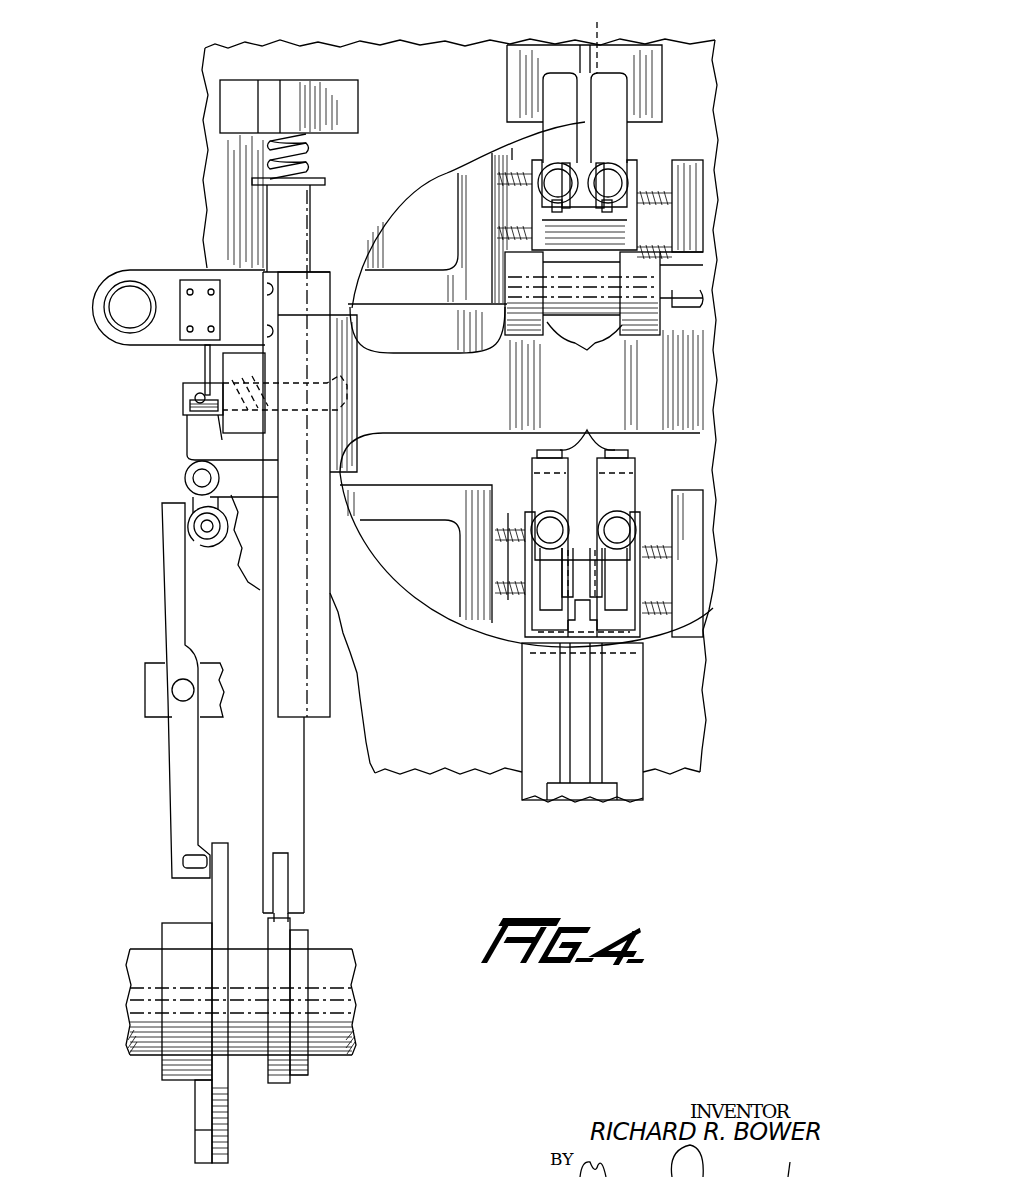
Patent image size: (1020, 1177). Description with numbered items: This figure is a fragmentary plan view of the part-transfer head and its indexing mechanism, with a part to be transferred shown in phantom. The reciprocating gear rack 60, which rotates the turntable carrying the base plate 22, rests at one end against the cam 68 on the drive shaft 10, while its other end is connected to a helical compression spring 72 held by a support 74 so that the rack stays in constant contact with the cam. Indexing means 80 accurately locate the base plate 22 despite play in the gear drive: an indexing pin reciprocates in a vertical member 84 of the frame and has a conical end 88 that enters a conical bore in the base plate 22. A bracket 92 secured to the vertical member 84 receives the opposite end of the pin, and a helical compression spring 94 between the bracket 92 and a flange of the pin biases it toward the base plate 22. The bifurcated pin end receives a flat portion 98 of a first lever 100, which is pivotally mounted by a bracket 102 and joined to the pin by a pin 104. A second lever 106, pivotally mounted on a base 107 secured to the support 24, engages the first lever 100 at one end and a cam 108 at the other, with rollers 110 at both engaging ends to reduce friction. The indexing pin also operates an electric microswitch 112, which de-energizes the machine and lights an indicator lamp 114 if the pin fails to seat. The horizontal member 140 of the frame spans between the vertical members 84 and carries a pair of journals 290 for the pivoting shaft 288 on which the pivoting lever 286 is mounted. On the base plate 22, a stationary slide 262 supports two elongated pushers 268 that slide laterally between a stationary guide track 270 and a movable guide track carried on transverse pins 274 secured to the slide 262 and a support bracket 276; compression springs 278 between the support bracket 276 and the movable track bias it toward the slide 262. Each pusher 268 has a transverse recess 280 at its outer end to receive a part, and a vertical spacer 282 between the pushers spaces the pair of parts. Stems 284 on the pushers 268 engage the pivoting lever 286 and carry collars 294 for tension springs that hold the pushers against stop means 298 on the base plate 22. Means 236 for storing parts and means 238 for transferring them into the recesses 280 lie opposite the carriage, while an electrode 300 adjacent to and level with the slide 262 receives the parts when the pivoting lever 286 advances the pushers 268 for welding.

The shaft 10 is at (138, 956).
The base plate 22 is at (421, 598).
The support 24 is at (414, 843).
The reciprocating gear rack 60 is at (305, 812).
The cam 68 is at (283, 1085).
The helical compression spring 72 is at (310, 158).
The support 74 is at (302, 80).
The indexing means 80 is at (108, 480).
The vertical member 84 is at (323, 722).
The conical end 88 is at (340, 408).
The bracket 92 is at (255, 434).
The helical compression spring 94 is at (222, 425).
The flat portion 98 is at (183, 410).
The first lever 100 is at (192, 453).
The bracket 102 is at (186, 478).
The pin 104 is at (199, 393).
The second lever 106 is at (163, 623).
The base 107 is at (148, 698).
The cam 108 is at (213, 901).
The rollers 110 is at (202, 548).
The electric microswitch 112 is at (180, 290).
The indicator lamp 114 is at (108, 307).
The horizontal member 140 is at (472, 397).
The means for storing a supply of parts 236 is at (645, 798).
The means for transferring parts 238 is at (551, 799).
The stationary slide 262 is at (622, 463).
The elongated pusher 268 is at (622, 136).
The stationary guide track 270 is at (653, 581).
The transverse pins 274 is at (510, 524).
The support bracket 276 is at (443, 268).
The compression springs 278 is at (658, 193).
The transverse recess 280 is at (622, 41).
The vertical spacer 282 is at (583, 157).
The stems 284 is at (550, 185).
The pivoting lever 286 is at (592, 233).
The pivoting shaft 288 is at (688, 292).
The journals 290 is at (588, 354).
The collars 294 is at (512, 150).
The stop means 298 is at (587, 429).
The electrode 300 is at (653, 90).